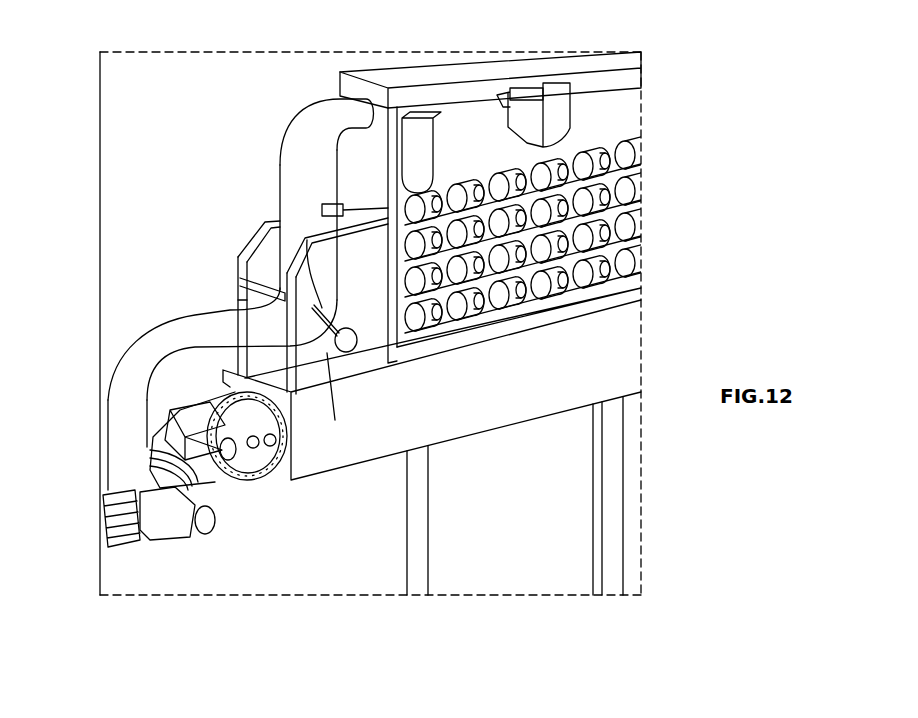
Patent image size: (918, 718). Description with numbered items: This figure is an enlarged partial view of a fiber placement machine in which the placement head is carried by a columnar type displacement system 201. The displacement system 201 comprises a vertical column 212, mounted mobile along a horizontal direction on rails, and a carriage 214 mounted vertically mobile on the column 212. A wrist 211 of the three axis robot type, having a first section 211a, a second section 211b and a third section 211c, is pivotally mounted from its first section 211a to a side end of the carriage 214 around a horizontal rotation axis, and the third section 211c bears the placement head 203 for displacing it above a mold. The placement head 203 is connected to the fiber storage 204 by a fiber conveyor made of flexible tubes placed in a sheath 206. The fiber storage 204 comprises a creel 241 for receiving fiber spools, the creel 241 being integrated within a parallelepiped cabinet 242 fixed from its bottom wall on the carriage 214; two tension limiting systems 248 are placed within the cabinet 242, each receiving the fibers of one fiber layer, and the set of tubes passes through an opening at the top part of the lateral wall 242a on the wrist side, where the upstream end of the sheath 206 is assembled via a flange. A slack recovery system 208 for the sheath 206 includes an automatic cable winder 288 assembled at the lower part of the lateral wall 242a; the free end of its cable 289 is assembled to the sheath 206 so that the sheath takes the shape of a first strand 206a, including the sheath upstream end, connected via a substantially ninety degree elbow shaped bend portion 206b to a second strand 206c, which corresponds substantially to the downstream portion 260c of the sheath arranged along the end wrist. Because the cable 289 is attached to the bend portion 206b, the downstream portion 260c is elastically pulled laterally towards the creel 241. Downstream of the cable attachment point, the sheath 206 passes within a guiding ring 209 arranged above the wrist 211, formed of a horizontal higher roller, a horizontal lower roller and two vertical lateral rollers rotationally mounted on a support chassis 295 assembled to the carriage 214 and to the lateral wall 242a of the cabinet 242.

The columnar type displacement system 201 is at (620, 540).
The placement head 203 is at (102, 527).
The fiber storage 204 is at (641, 100).
The sheath 206 is at (278, 166).
The first strand 206a is at (290, 128).
The bend portion 206b is at (282, 265).
The second strand 206c is at (160, 328).
The slack recovery system 208 is at (362, 350).
The guiding ring 209 is at (233, 288).
The wrist 211 is at (243, 473).
The first section 211a is at (268, 470).
The second section 211b is at (183, 428).
The third section 211c is at (158, 468).
The vertical column 212 is at (612, 493).
The carriage 214 is at (625, 355).
The creel 241 is at (633, 225).
The parallelepiped cabinet 242 is at (443, 60).
The lateral wall 242a is at (336, 68).
The tension limiting system 248 is at (557, 97).
The downstream portion 260c is at (120, 435).
The automatic cable winder 288 is at (343, 350).
The cable 289 is at (335, 420).
The support chassis 295 is at (263, 220).